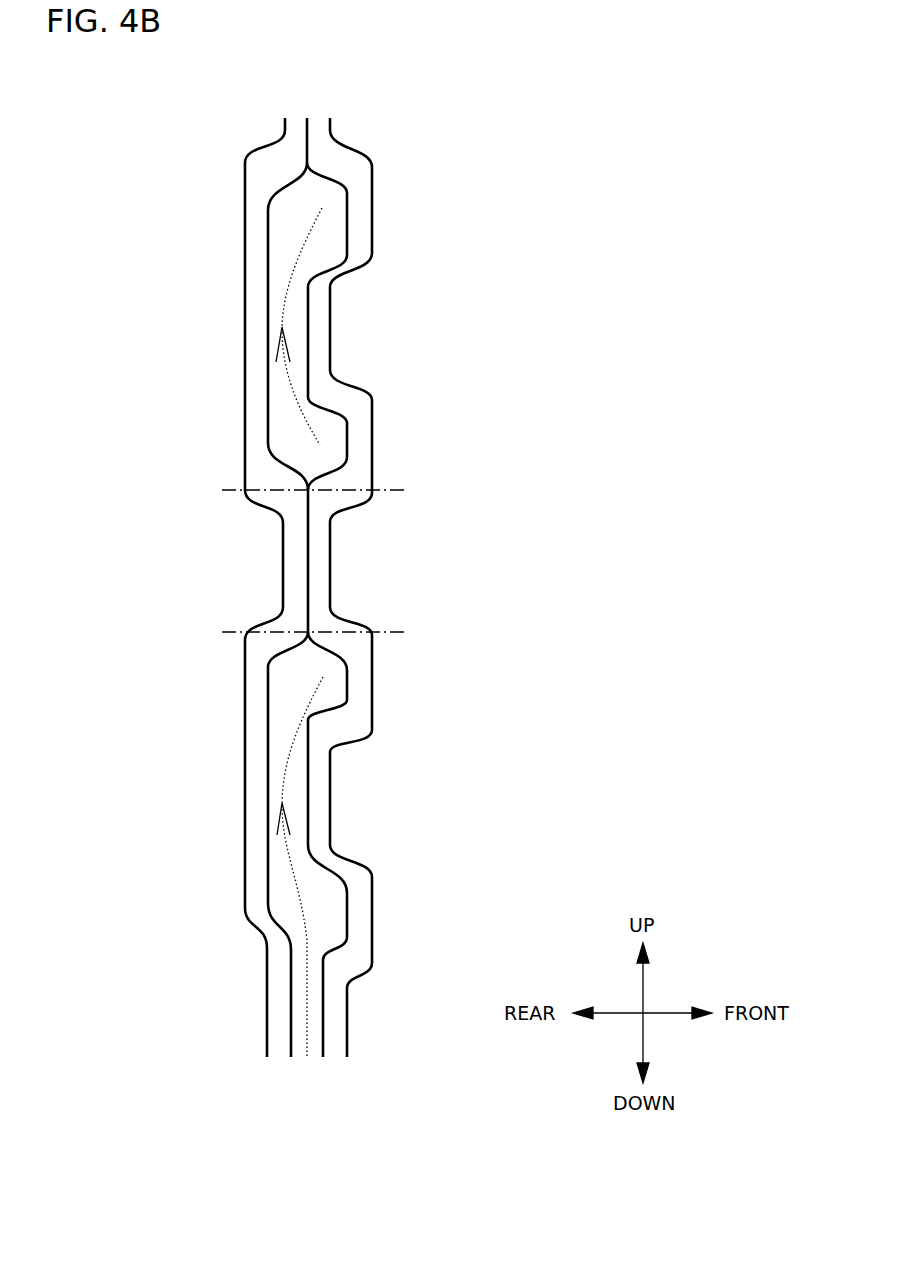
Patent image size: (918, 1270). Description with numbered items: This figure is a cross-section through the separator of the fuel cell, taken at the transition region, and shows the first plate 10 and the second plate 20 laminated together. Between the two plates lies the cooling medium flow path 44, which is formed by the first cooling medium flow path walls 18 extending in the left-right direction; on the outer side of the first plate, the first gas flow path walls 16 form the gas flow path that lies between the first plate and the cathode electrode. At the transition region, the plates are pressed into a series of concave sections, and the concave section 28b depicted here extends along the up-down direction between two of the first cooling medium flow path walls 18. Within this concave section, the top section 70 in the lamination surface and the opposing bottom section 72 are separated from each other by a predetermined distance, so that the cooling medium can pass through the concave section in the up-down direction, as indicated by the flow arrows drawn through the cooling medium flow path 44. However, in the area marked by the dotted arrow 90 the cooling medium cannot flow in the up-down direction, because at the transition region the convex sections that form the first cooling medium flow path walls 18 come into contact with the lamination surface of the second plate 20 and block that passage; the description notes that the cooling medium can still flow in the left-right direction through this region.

The first plate 10 is at (337, 1010).
The second plate 20 is at (280, 1008).
The concave section 28b is at (258, 380).
The first gas flow path wall 16 is at (333, 783).
The first cooling medium flow path wall 18 is at (343, 673).
The cooling medium flow path 44 is at (303, 213).
The top section 70 is at (303, 777).
The bottom section 72 is at (272, 435).
The dotted arrow 90 is at (388, 492).